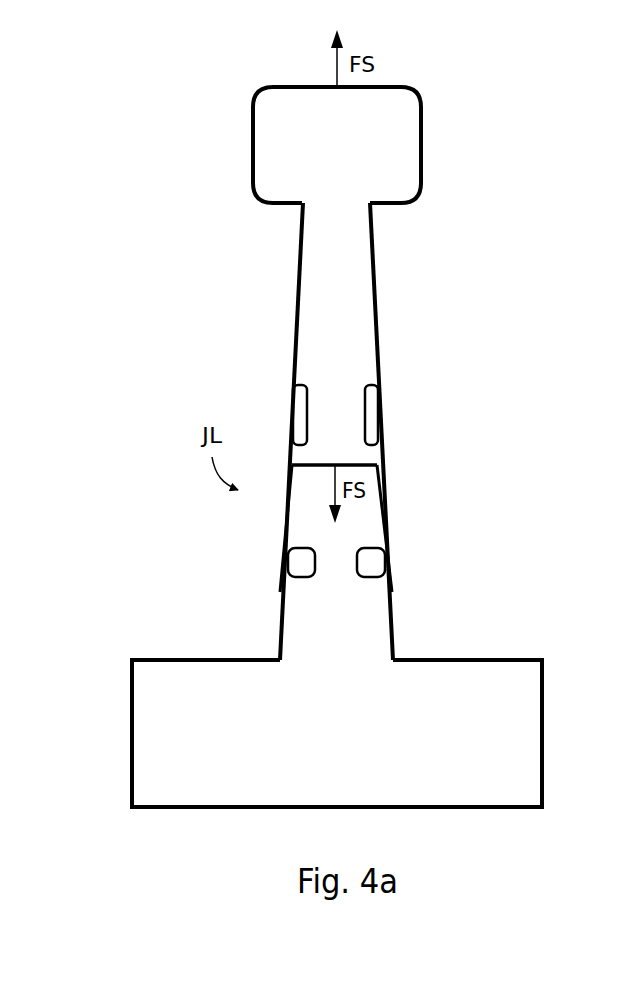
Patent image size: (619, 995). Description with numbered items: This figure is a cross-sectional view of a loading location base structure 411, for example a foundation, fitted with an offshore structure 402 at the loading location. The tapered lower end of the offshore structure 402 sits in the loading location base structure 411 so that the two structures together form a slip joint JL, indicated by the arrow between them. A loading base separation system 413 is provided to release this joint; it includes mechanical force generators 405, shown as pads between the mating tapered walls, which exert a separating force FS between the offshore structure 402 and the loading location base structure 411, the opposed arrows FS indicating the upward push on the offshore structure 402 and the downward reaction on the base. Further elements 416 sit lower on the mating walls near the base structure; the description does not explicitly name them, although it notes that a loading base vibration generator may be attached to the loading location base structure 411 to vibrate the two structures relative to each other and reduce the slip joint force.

The head / upper plate of fastener 402 is at (305, 108).
The tapered legs / shank 413 is at (270, 364).
The upper latching pads 405 is at (290, 415).
The lower latching pads 416 is at (297, 562).
The loading location base structure 411 is at (188, 722).